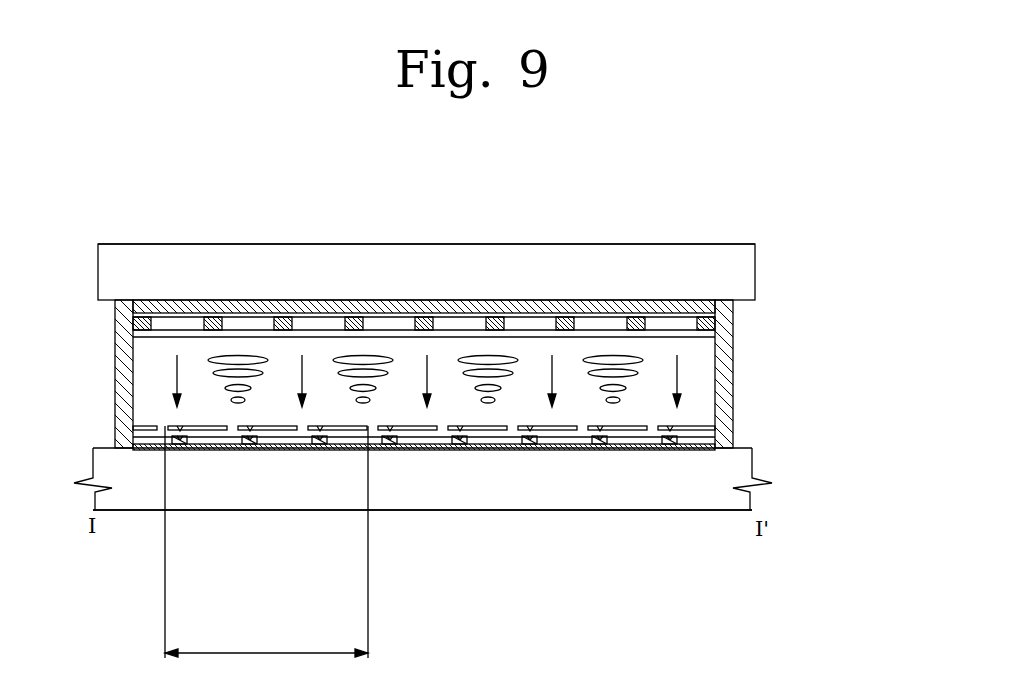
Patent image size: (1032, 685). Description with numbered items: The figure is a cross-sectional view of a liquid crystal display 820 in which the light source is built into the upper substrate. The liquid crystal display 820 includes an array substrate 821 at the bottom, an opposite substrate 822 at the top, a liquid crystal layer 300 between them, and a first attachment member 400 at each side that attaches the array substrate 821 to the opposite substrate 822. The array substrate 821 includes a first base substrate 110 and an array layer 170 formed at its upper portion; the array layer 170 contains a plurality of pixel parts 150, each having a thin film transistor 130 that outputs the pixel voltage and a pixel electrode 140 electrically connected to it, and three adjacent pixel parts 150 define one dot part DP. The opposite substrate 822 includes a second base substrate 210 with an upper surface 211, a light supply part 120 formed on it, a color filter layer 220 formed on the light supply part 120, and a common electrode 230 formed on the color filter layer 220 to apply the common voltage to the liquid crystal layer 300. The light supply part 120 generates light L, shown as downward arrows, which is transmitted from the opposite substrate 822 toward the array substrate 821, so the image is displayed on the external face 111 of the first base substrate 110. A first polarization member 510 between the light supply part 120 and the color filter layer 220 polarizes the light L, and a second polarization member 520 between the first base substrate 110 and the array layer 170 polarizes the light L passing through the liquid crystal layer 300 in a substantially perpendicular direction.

The liquid crystal display 820 is at (690, 154).
The opposite substrate 822 is at (848, 260).
The array substrate 821 is at (848, 407).
The second base substrate 210 is at (748, 268).
The upper surface of upper base substrate 211 is at (590, 244).
The light supply part 120 is at (735, 308).
The first polarization member 510 is at (415, 307).
The color filter layer 220 is at (718, 323).
The common electrode 230 is at (680, 343).
The first attachment member 400 is at (118, 325).
The liquid crystal layer 300 is at (145, 362).
The light L is at (168, 378).
The array layer 170 is at (490, 510).
The pixel part 150 is at (424, 521).
The pixel electrode 140 is at (283, 450).
The thin film transistor 130 is at (250, 450).
The second polarization member 520 is at (457, 450).
The first base substrate 110 is at (748, 472).
The external face 111 is at (592, 512).
The dot part DP is at (266, 542).